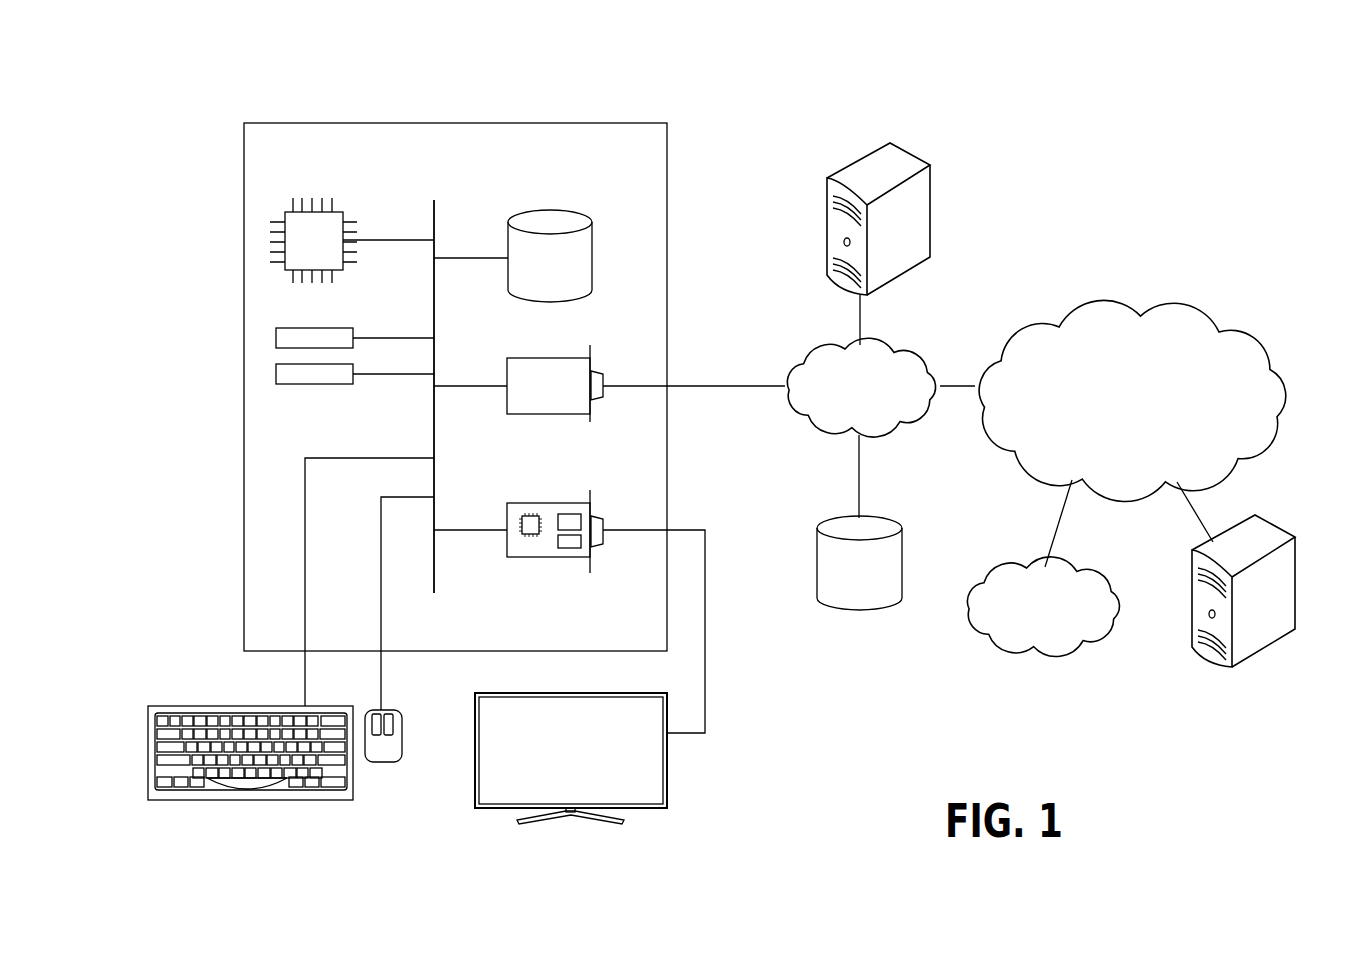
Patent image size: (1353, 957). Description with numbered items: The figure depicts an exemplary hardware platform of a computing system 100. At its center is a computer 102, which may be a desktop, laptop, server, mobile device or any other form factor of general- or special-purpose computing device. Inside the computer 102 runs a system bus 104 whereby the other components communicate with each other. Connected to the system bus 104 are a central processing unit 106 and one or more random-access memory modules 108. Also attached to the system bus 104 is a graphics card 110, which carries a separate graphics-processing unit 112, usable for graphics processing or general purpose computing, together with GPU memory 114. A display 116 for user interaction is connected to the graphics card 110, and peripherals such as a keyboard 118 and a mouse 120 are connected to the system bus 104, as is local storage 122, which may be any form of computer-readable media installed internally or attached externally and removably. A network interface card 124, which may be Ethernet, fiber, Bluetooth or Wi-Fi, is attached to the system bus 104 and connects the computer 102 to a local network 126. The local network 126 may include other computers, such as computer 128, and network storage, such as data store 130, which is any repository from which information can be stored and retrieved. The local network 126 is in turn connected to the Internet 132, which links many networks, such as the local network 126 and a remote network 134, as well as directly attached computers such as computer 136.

The computing system 100 is at (234, 98).
The computer 102 is at (621, 122).
The system bus 104 is at (436, 210).
The central processing unit (CPU) 106 is at (338, 210).
The random-access memory (RAM) modules 108 is at (354, 371).
The graphics card 110 is at (547, 533).
The graphics-processing unit (GPU) 112 is at (530, 537).
The GPU memory 114 is at (567, 549).
The display 116 is at (667, 787).
The keyboard 118 is at (252, 800).
The mouse 120 is at (380, 762).
The local storage 122 is at (596, 243).
The network interface card (NIC) 124 is at (507, 370).
The local network 126 is at (917, 345).
The computer 128 is at (917, 153).
The data store 130 is at (893, 520).
The Internet 132 is at (1178, 306).
The remote network 134 is at (1098, 563).
The computer 136 is at (1270, 520).